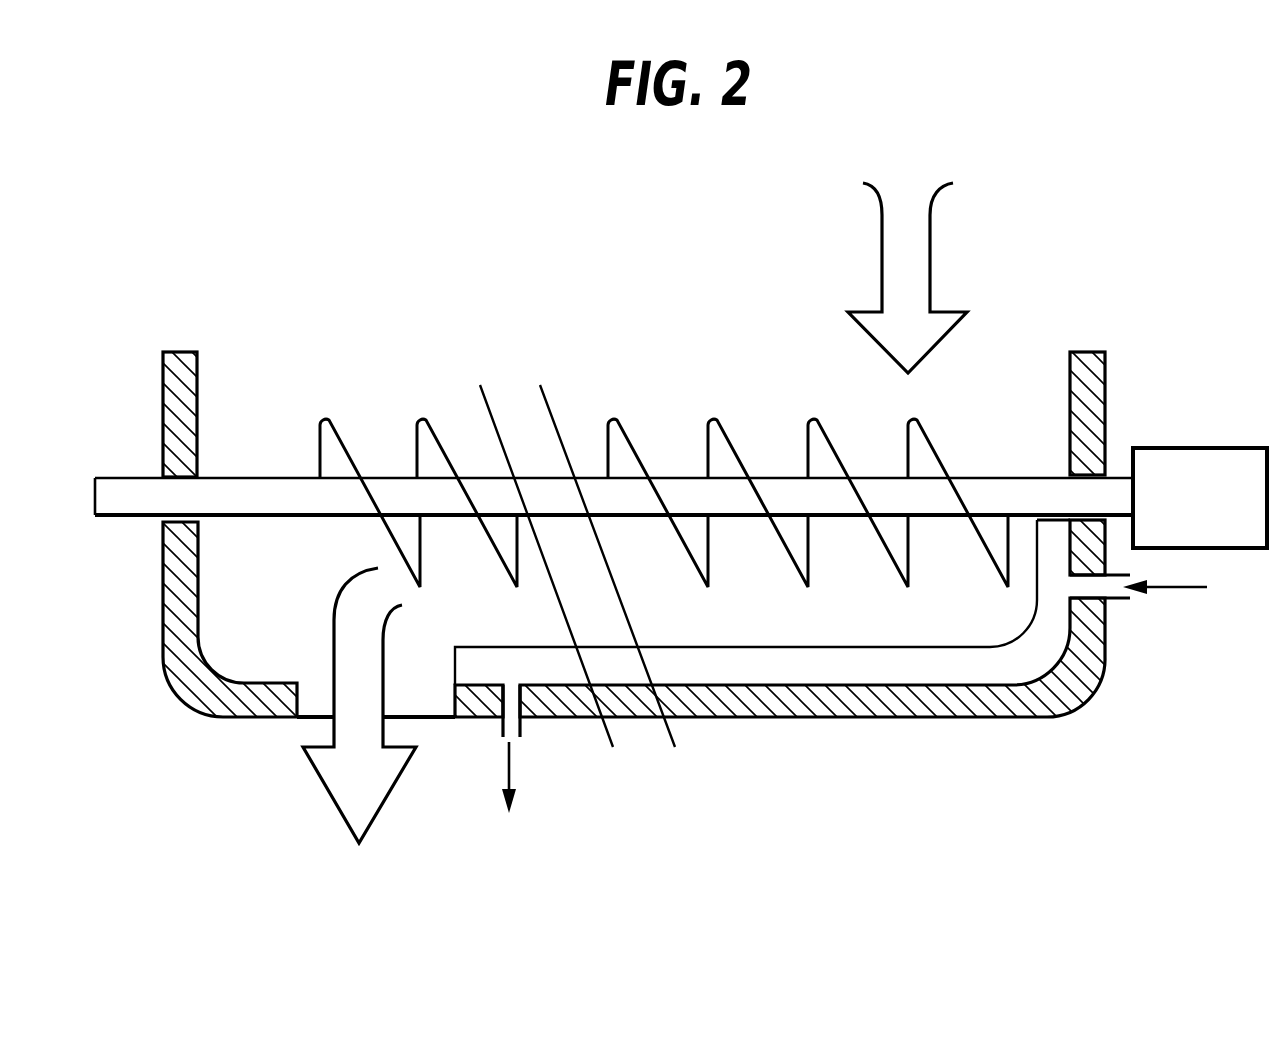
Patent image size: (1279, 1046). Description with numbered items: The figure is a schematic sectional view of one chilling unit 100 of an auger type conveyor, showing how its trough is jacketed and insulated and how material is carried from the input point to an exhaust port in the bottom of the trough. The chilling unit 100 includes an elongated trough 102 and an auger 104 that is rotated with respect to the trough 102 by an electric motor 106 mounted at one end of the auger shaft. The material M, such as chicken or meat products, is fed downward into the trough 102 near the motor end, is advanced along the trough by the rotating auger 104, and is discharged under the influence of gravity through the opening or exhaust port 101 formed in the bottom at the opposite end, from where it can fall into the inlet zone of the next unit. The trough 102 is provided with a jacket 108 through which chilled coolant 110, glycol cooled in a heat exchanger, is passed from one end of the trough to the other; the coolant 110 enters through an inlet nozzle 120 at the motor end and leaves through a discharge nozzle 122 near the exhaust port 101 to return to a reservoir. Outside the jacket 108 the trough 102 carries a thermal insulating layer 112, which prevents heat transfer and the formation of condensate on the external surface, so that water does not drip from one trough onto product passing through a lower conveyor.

The chilling unit 100 is at (376, 282).
The exhaust port 101 is at (428, 695).
The trough 102 is at (280, 447).
The auger 104 is at (435, 430).
The electric motor 106 is at (1183, 467).
The jacket 108 is at (722, 663).
The chilled coolant 110 is at (1177, 588).
The thermal insulating layer 112 is at (850, 702).
The inlet nozzle 120 is at (1117, 600).
The discharge nozzle 122 is at (523, 728).
The chilled material M is at (907, 258).